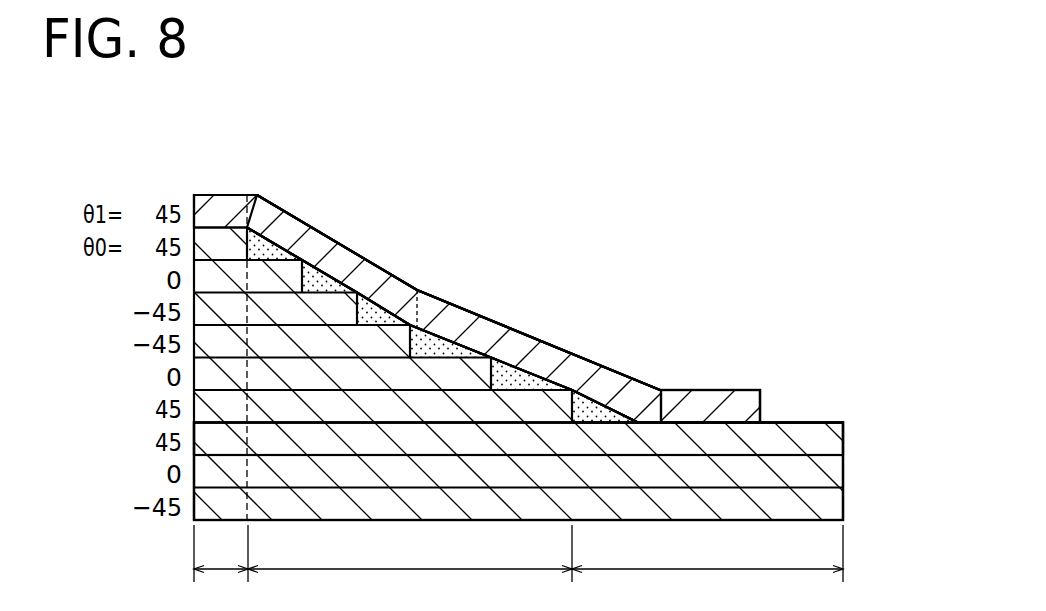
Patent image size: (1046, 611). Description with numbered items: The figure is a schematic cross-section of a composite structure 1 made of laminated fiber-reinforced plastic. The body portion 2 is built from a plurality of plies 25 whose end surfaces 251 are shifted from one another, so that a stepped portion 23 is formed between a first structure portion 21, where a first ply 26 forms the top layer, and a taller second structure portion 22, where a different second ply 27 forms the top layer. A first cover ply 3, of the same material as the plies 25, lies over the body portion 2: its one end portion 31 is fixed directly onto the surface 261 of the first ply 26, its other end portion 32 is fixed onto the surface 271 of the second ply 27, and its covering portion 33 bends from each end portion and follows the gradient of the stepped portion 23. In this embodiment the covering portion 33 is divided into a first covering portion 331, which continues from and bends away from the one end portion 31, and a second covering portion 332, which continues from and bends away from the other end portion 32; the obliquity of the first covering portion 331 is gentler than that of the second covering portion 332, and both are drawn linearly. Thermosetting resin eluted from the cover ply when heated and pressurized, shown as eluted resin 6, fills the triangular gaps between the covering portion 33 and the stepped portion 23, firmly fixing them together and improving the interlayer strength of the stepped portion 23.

The composite structure 1 is at (421, 99).
The body portion 2 is at (795, 420).
The first cover ply 3 is at (747, 387).
The eluted resin 6 is at (384, 313).
The first structure portion 21 is at (707, 553).
The second structure portion 22 is at (221, 553).
The stepped portion 23 is at (410, 553).
The plies 25 is at (526, 385).
The first ply 26 is at (845, 437).
The second ply 27 is at (269, 228).
The one end portion 31 is at (703, 388).
The other end portion 32 is at (202, 203).
The covering portion 33 is at (453, 309).
The end surfaces 251 is at (583, 405).
The surface of the first ply 261 is at (826, 421).
The surface of the second ply 271 is at (234, 226).
The first covering portion 331 is at (449, 318).
The second covering portion 332 is at (349, 254).